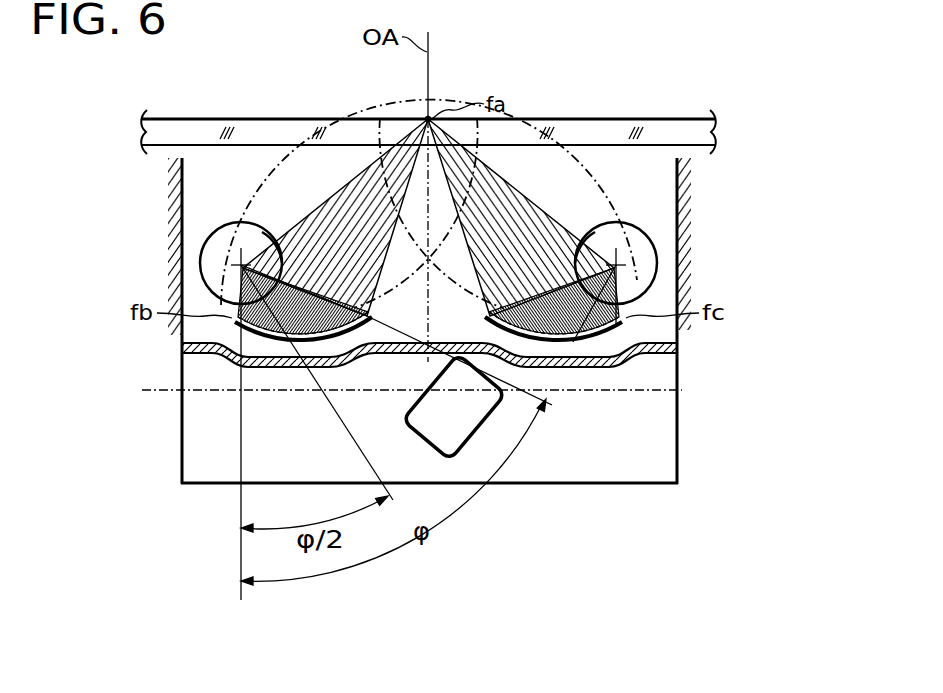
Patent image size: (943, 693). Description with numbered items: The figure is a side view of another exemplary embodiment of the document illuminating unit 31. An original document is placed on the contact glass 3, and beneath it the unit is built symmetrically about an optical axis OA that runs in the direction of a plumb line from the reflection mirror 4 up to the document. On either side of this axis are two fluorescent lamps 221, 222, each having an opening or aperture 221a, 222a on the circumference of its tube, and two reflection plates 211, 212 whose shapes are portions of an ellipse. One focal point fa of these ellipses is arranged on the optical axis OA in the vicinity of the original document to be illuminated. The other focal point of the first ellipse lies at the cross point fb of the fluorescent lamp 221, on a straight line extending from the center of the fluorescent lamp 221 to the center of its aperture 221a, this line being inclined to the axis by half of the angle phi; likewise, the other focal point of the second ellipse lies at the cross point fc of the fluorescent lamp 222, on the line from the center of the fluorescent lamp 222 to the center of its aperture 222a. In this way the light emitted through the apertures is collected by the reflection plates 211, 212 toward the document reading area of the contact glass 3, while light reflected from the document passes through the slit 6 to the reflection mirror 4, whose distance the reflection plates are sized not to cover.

The contact glass 3 is at (680, 118).
The document illuminating unit 31 is at (726, 220).
The fluorescent lamp 221 is at (199, 268).
The aperture 221a is at (264, 270).
The fluorescent lamp 222 is at (657, 267).
The aperture 222a is at (593, 270).
The slit 6 is at (436, 347).
The reflection plate 211 is at (291, 345).
The reflection plate 212 is at (583, 347).
The reflection mirror 4 is at (404, 421).